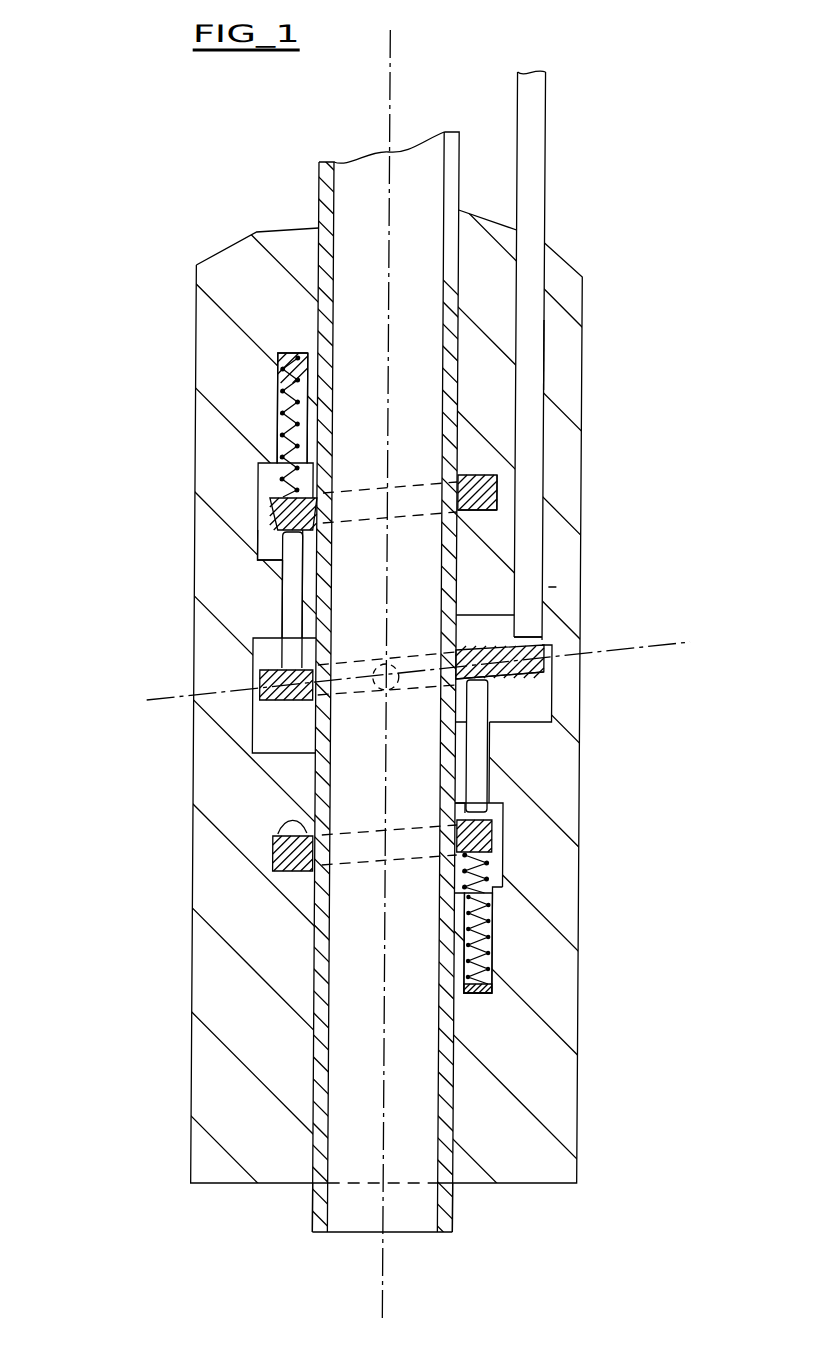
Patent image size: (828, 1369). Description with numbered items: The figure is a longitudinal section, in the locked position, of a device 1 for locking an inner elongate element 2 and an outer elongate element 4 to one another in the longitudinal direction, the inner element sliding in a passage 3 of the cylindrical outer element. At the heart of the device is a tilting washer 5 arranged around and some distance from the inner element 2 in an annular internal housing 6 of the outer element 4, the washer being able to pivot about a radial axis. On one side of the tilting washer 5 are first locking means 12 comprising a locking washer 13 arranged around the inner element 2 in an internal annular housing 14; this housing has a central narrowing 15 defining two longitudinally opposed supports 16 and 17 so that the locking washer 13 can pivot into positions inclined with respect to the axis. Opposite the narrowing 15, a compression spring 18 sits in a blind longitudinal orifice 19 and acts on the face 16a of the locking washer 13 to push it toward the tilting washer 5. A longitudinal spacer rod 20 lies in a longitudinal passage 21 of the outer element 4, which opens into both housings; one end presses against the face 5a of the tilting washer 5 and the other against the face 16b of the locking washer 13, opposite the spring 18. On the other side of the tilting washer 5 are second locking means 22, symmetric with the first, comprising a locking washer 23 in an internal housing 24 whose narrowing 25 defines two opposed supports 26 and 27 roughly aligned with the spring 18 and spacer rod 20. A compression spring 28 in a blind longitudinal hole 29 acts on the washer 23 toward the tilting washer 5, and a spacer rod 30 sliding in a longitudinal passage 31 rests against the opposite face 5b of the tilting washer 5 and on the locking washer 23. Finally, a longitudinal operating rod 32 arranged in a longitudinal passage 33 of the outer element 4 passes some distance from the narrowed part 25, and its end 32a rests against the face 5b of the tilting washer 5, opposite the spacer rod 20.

The locking device 1 is at (550, 587).
The inner elongate element 2 is at (325, 190).
The passage 3 is at (316, 1160).
The outer elongate element 4 is at (222, 1087).
The tilting washer 5 is at (548, 668).
The face of tilting washer 5a is at (500, 688).
The opposite face of tilting washer 5b is at (275, 668).
The annular internal housing 6 is at (268, 735).
The first locking means 12 is at (497, 900).
The locking washer 13 is at (500, 835).
The internal annular housing 14 is at (507, 806).
The central narrowing 15 is at (304, 836).
The support 16 is at (282, 872).
The face of locking washer 16a is at (516, 883).
The face of locking washer 16b is at (460, 822).
The support 17 is at (282, 840).
The compression spring 18 is at (498, 935).
The blind longitudinal orifice 19 is at (498, 960).
The spacer rod 20 is at (492, 742).
The longitudinal passage 21 is at (494, 778).
The second locking means 22 is at (237, 470).
The locking washer 23 is at (275, 510).
The internal housing 24 is at (268, 545).
The narrowing 25 is at (480, 540).
The support 26 is at (497, 475).
The support 27 is at (480, 520).
The compression spring 28 is at (283, 402).
The blind longitudinal hole 29 is at (283, 358).
The spacer rod 30 is at (286, 625).
The longitudinal passage 31 is at (290, 590).
The operating rod 32 is at (538, 305).
The end of operating rod 32a is at (535, 628).
The longitudinal passage 33 is at (548, 352).